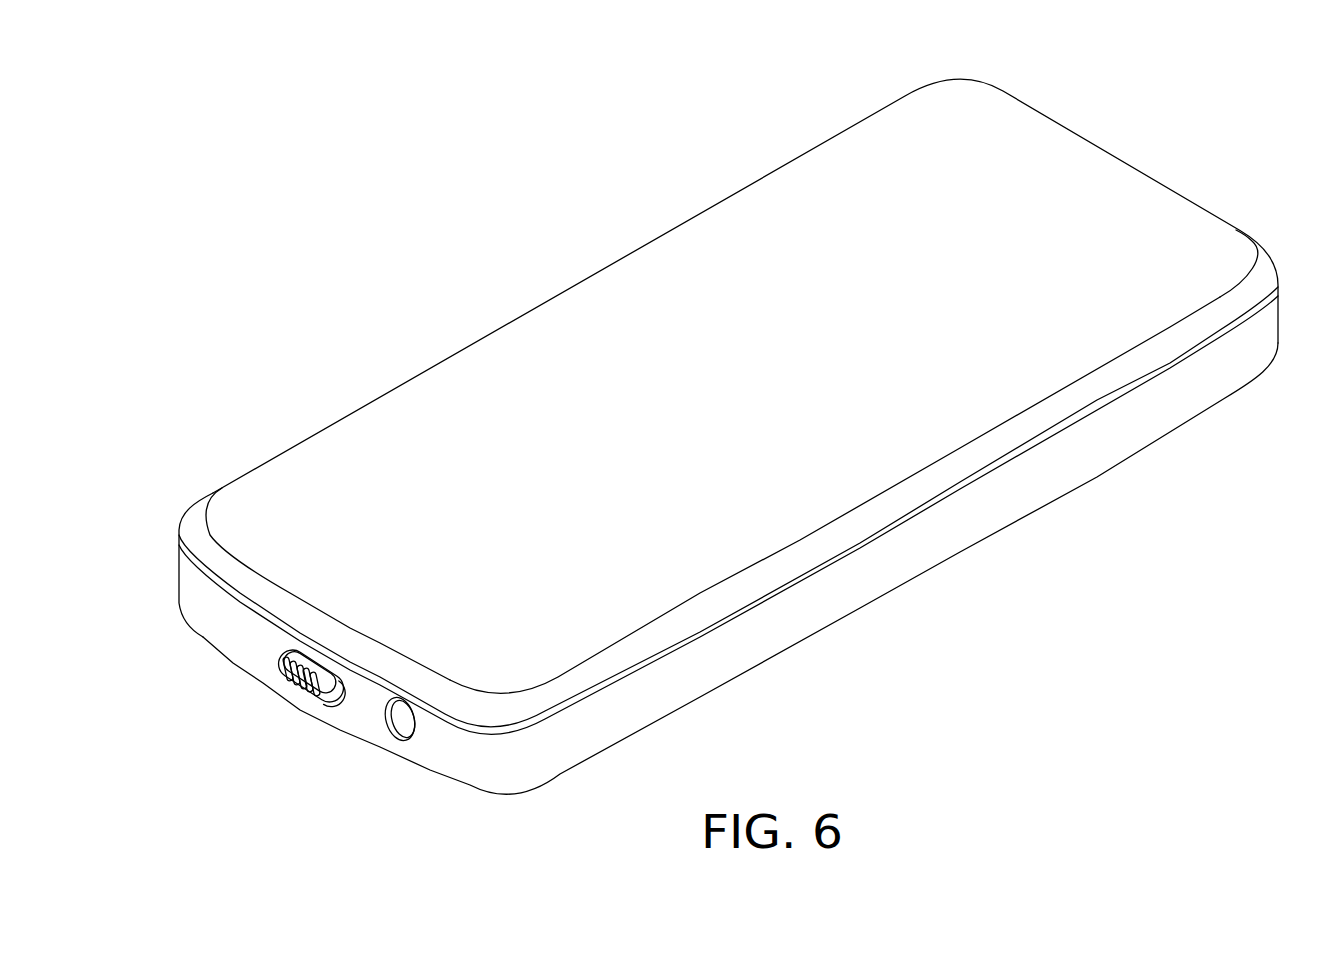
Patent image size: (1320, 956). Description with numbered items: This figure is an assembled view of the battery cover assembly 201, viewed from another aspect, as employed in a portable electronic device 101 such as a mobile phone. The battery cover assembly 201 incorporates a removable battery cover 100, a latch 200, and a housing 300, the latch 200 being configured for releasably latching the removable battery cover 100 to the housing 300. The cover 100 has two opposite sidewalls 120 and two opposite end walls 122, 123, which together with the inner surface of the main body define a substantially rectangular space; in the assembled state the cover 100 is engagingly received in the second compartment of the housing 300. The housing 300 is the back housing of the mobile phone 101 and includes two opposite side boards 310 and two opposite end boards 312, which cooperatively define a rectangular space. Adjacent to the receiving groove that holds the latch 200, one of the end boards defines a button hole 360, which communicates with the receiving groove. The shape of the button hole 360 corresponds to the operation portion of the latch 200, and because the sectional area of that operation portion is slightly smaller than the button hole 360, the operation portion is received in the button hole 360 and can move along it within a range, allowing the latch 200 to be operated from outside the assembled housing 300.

The portable electronic device 101 is at (773, 62).
The removable battery cover 100 is at (280, 557).
The sidewalls 120 is at (767, 172).
The end wall 122 is at (1127, 158).
The end wall 123 is at (208, 546).
The housing 300 is at (257, 641).
The side boards 310 is at (797, 620).
The end boards 312 is at (458, 750).
The battery cover assembly 201 is at (248, 764).
The latch 200 is at (342, 693).
The button hole 360 is at (326, 682).